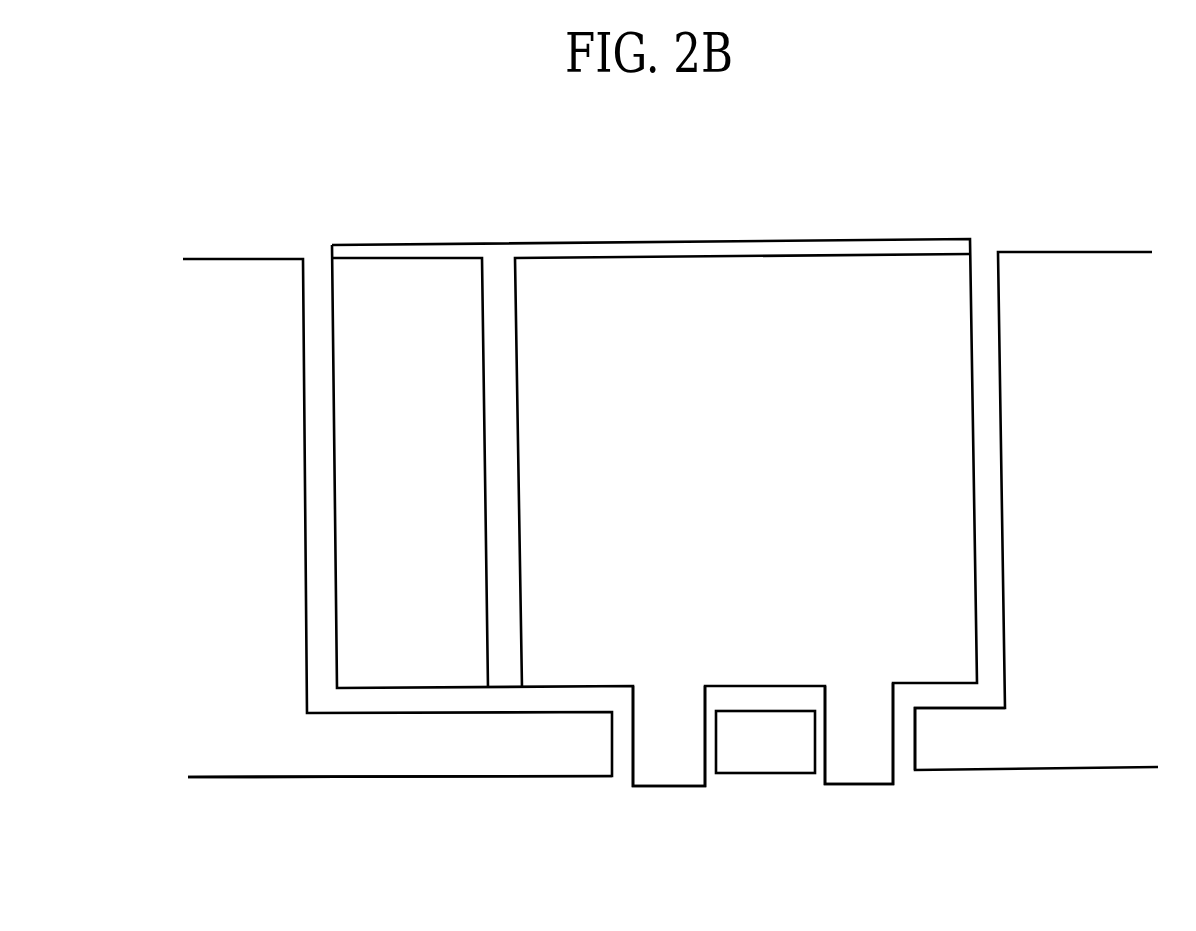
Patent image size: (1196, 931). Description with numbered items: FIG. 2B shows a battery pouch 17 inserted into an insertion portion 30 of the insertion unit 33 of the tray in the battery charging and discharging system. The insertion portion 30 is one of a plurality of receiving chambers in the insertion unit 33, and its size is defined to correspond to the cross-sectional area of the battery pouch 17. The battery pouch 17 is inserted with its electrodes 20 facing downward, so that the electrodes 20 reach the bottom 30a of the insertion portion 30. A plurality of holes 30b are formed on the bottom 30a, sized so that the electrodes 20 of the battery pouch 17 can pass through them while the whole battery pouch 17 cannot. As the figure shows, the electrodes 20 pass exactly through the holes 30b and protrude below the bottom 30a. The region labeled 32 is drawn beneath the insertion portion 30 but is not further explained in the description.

The insertion portion 30 is at (312, 240).
The battery pouch 17 is at (689, 228).
The insertion unit 33 is at (1039, 240).
The bottom of insertion portion 30a is at (973, 707).
The lower surface 32 is at (352, 741).
The holes 30b is at (614, 787).
The electrodes 20 is at (860, 792).